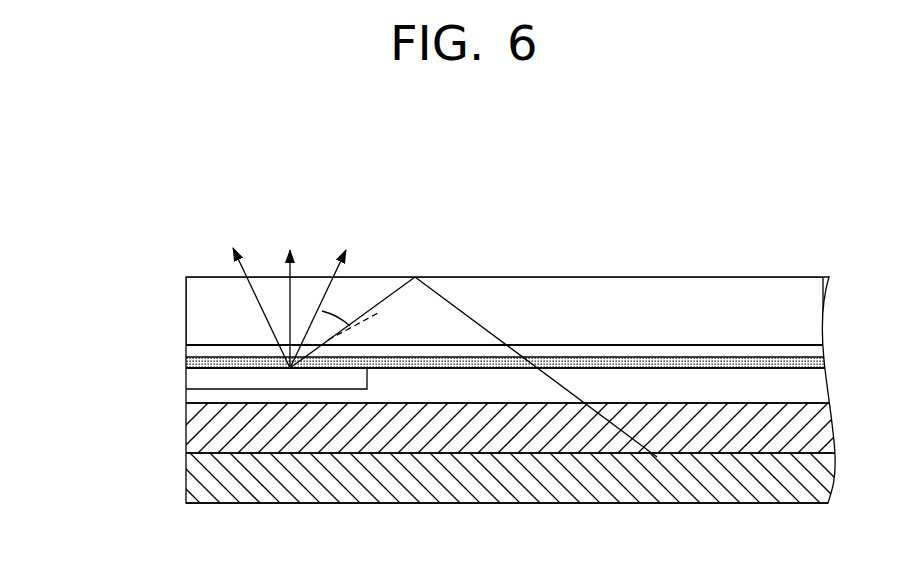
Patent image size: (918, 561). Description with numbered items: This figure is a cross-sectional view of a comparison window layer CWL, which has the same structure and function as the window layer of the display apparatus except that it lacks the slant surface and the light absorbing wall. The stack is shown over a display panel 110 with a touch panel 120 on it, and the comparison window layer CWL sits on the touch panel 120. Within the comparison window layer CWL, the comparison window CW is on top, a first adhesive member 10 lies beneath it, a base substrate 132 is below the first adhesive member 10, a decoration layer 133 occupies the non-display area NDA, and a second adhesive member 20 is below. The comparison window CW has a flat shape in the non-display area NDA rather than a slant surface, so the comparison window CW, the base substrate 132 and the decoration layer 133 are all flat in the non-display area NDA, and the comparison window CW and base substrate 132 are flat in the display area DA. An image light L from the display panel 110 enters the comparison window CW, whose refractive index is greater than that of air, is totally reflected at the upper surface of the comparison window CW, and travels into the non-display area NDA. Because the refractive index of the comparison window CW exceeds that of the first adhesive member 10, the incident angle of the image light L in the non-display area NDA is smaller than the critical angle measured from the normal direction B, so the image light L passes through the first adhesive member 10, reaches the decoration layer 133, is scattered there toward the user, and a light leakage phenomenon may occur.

The first adhesive member 10 is at (813, 353).
The second adhesive member 20 is at (813, 389).
The display panel 110 is at (207, 470).
The touch panel 120 is at (207, 422).
The base substrate 132 is at (208, 360).
The decoration layer 133 is at (198, 378).
The comparison window CW is at (200, 310).
The comparison window layer CWL is at (82, 302).
The non-display area NDA is at (367, 367).
The display area DA is at (829, 270).
The image light L is at (473, 317).
The normal direction B is at (322, 343).